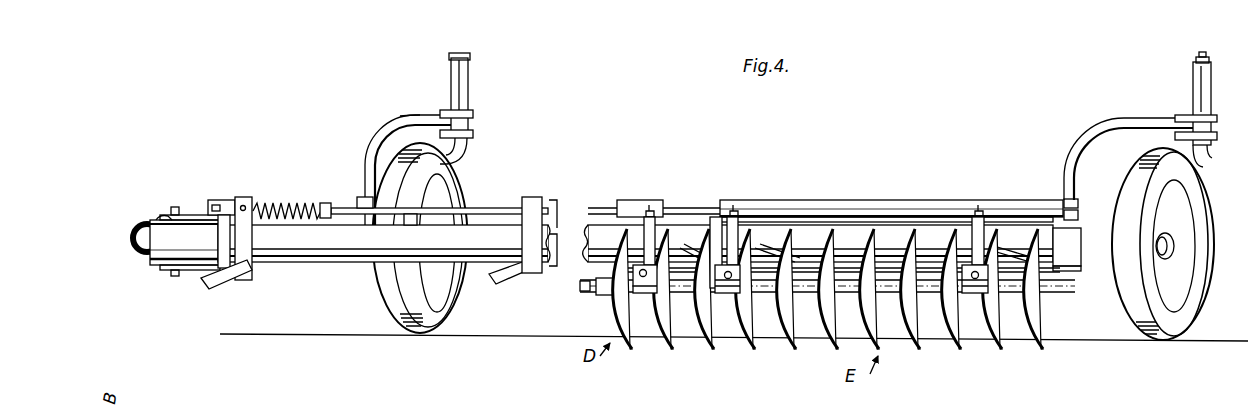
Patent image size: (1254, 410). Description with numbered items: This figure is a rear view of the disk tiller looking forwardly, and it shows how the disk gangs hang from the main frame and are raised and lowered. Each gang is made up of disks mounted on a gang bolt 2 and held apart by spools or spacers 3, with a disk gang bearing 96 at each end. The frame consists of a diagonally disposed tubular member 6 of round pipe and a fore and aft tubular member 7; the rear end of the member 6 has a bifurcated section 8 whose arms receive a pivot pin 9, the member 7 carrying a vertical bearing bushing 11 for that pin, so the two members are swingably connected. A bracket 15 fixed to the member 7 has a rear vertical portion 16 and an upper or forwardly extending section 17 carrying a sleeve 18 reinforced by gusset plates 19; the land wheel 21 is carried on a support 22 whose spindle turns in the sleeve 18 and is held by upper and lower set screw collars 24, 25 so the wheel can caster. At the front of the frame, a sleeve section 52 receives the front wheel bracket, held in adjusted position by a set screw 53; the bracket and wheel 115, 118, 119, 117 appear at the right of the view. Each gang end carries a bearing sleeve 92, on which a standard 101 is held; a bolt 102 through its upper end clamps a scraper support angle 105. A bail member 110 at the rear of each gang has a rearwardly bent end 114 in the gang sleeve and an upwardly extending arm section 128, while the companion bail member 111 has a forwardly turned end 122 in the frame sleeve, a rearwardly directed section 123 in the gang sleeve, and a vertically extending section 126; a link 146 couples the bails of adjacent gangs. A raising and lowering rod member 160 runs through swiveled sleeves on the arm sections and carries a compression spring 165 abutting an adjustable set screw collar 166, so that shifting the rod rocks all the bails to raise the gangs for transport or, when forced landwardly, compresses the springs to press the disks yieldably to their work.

The gang bolt 2 is at (583, 293).
The spools or spacers 3 is at (606, 296).
The diagonally disposed tubular member 6 is at (292, 262).
The fore and aft tubular member 7 is at (135, 232).
The bifurcated section 8 is at (202, 215).
The pivot pin 9 is at (175, 206).
The vertical bearing bushing 11 is at (164, 217).
The bracket 15 is at (369, 145).
The rear vertical portion 16 is at (362, 183).
The upper or forwardly extending section 17 is at (423, 114).
The sleeve 18 is at (469, 84).
The gusset plates 19 is at (473, 116).
The land wheel 21 is at (395, 296).
The support 22 is at (470, 161).
The upper set screw collar 24 is at (471, 60).
The lower set screw collar 25 is at (473, 134).
The sleeve section 52 is at (1078, 202).
The set screw 53 is at (1078, 214).
The bearing sleeve 92 is at (662, 280).
The disk gang bearing 96 is at (728, 300).
The standard 101 is at (645, 228).
The bolt 102 is at (649, 204).
The scraper support angle 105 is at (659, 199).
The bail member 110 is at (226, 278).
The bail member 111 is at (512, 278).
The rearwardly bent end 114 is at (746, 280).
The rear wheel 115 is at (1246, 190).
The thrust washer 117 is at (1222, 50).
The spindle post 118 is at (1246, 102).
The rear wheel arm 119 is at (1116, 108).
The forwardly turned end 122 is at (1066, 272).
The rearwardly directed section 123 is at (645, 300).
The vertically extending section 126 is at (522, 234).
The upwardly extending arm section 128 is at (257, 236).
The link 146 is at (551, 200).
The raising and lowering rod member 160 is at (494, 207).
The compression spring 165 is at (300, 203).
The adjustable set screw collar 166 is at (333, 197).